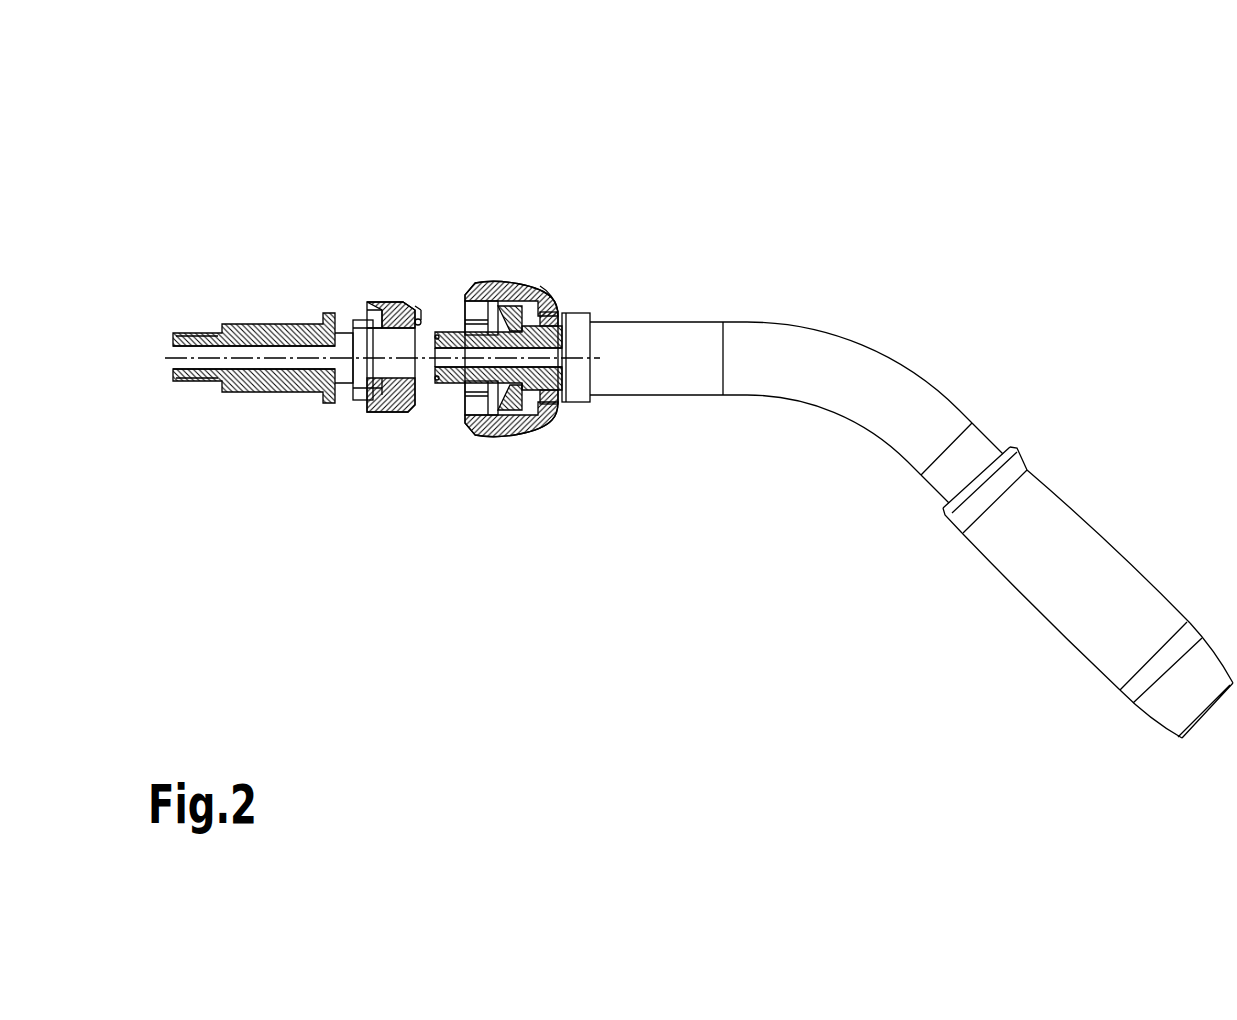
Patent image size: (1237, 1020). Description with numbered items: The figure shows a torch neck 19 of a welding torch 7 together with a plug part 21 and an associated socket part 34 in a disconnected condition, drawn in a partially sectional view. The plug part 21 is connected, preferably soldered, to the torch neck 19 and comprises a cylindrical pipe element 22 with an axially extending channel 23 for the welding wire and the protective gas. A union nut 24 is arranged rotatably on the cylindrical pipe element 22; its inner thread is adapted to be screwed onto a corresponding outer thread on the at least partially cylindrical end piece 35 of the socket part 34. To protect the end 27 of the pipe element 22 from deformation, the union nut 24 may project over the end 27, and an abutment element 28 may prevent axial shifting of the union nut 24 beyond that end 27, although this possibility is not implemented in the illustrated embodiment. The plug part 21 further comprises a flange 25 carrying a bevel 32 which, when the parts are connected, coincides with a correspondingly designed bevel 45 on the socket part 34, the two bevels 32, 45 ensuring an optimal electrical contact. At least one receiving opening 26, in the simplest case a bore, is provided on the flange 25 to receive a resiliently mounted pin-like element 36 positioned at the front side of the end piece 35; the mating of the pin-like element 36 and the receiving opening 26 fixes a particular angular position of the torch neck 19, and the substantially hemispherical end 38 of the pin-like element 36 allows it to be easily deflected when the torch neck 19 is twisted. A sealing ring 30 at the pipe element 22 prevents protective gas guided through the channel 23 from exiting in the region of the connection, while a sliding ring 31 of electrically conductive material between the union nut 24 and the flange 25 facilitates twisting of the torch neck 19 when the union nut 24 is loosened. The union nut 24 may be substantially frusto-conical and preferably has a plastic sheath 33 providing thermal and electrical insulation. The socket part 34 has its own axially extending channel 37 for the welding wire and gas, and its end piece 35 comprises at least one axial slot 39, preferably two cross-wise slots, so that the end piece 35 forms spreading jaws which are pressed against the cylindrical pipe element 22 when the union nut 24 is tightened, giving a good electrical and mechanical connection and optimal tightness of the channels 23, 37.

The welding torch 7 is at (1115, 222).
The torch neck 19 is at (847, 368).
The plug part 21 is at (538, 248).
The cylindrical pipe element 22 is at (481, 300).
The axially extending channel 23 is at (467, 363).
The union nut 24 is at (548, 292).
The flange 25 is at (527, 423).
The receiving opening 26 is at (528, 306).
The end of the pipe element 27 is at (437, 330).
The abutment element 28 is at (548, 420).
The sealing ring 30 is at (440, 382).
The sliding ring 31 is at (563, 393).
The bevel 32 is at (463, 383).
The plastic sheath 33 is at (530, 300).
The socket part 34 is at (292, 262).
The end piece 35 is at (385, 405).
The pin-like element 36 is at (395, 303).
The axially extending channel 37 is at (260, 363).
The hemispherical end 38 is at (423, 304).
The axial slot 39 is at (368, 307).
The bevel 45 is at (408, 301).